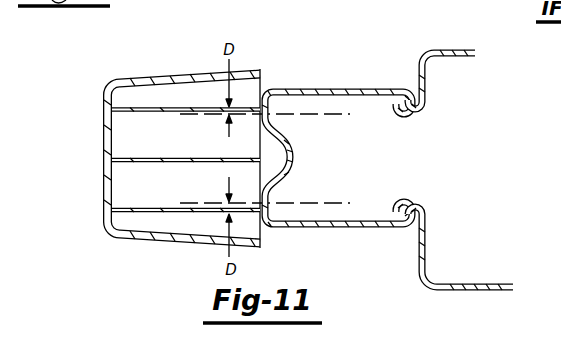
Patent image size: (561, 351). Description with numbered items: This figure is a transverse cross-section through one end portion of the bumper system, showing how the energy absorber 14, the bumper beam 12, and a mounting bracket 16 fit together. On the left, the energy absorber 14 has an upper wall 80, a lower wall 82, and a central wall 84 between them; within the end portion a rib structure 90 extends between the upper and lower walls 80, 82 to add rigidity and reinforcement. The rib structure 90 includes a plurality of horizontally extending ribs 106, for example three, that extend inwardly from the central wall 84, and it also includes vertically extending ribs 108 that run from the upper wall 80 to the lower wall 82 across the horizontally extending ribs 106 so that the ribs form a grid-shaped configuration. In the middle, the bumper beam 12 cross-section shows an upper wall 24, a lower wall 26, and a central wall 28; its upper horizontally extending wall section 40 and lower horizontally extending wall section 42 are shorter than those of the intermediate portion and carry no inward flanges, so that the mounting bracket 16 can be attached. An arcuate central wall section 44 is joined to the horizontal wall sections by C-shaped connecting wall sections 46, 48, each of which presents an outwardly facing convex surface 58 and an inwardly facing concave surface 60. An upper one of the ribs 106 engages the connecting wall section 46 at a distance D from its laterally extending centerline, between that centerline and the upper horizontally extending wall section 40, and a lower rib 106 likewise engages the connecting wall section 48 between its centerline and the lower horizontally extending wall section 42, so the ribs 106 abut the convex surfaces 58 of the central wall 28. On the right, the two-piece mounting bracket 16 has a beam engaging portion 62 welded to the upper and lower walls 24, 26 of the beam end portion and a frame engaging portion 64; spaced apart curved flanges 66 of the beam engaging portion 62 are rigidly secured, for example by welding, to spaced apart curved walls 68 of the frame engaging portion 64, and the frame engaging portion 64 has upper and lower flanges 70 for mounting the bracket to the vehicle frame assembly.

The bumper beam 12 is at (305, 156).
The energy absorber 14 is at (167, 156).
The mounting bracket 16 is at (459, 160).
The upper wall 24 is at (306, 78).
The lower wall 26 is at (299, 230).
The central wall 28 is at (305, 163).
The upper horizontally extending wall section 40 is at (350, 86).
The lower horizontally extending wall section 42 is at (331, 225).
The arcuate central wall section 44 is at (290, 145).
The connecting wall section 46 is at (280, 98).
The connecting wall section 48 is at (272, 222).
The outwardly facing convex surface 58 is at (263, 193).
The inwardly facing concave surface 60 is at (267, 119).
The beam engaging portion 62 is at (378, 87).
The frame engaging portion 64 is at (452, 58).
The curved flange 66 is at (396, 106).
The curved wall 68 is at (426, 103).
The flange 70 is at (461, 49).
The upper wall 80 is at (200, 66).
The lower wall 82 is at (143, 246).
The central wall 84 is at (96, 106).
The rib structure 90 is at (125, 206).
The horizontally extending rib 106 is at (133, 112).
The vertically extending rib 108 is at (263, 80).